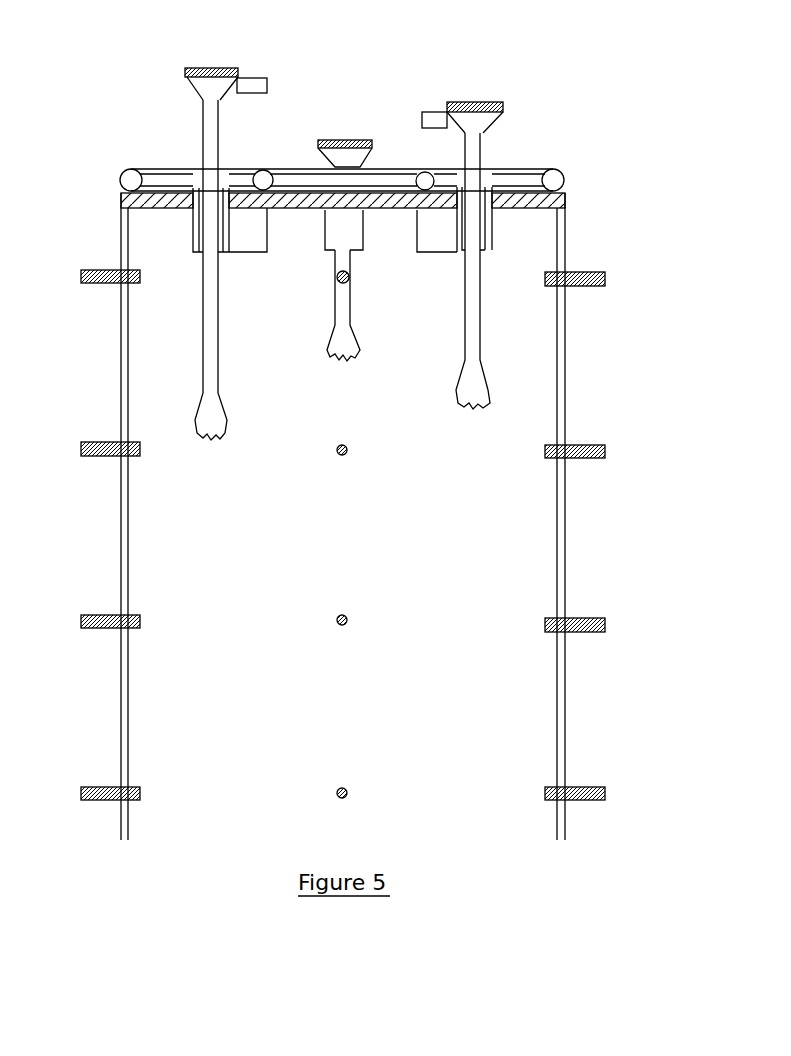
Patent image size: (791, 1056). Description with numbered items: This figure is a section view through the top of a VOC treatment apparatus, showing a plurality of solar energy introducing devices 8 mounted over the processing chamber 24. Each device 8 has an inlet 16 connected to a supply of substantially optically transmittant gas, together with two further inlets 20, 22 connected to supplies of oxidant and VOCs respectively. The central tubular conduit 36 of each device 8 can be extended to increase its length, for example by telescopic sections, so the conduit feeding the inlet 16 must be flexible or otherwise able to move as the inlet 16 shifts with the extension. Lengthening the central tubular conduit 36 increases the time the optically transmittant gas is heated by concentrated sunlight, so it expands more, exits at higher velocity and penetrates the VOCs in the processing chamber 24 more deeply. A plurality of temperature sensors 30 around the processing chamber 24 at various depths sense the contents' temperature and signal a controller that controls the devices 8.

The solar energy introducing device 8 is at (378, 220).
The optically transmittant gas inlet 16 is at (267, 88).
The oxidant inlet 20 is at (342, 142).
The VOC inlet 22 is at (170, 177).
The processing chamber 24 is at (525, 357).
The temperature sensor 30 is at (93, 270).
The central tubular conduit 36 is at (212, 123).